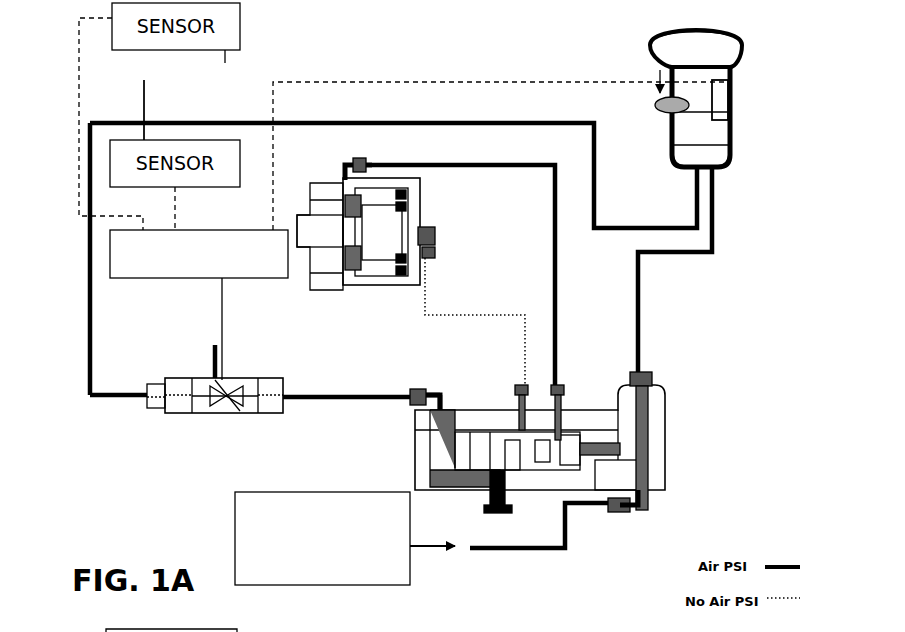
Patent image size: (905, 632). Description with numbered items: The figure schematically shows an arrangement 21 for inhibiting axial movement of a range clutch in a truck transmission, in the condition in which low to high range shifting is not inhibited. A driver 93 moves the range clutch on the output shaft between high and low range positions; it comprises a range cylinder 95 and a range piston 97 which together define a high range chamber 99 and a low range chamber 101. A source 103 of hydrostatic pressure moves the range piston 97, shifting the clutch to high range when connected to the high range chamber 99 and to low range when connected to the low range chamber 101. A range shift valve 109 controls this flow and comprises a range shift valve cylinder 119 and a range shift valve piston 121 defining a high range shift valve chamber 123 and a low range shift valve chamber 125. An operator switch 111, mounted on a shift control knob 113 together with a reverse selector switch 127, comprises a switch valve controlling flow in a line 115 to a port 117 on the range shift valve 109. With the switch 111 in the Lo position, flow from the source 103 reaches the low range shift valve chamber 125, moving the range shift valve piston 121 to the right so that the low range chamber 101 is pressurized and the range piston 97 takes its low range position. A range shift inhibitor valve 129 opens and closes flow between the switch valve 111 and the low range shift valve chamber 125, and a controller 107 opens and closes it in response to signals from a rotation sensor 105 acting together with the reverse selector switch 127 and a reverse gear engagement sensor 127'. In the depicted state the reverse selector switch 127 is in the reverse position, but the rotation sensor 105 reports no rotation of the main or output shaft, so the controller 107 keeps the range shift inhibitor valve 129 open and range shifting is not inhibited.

The arrangement 21 is at (752, 253).
The driver 93 is at (396, 186).
The range cylinder 95 is at (335, 283).
The range piston 97 is at (370, 200).
The high range chamber 99 is at (428, 240).
The low range chamber 101 is at (353, 247).
The source of hydrostatic pressure 103 is at (235, 522).
The rotation sensor 105 is at (148, 99).
The controller 107 is at (110, 248).
The range shift valve 109 is at (555, 418).
The switch 111 is at (658, 100).
The shift control knob 113 is at (700, 105).
The line 115 is at (90, 323).
The port 117 is at (417, 388).
The range shift valve cylinder 119 is at (480, 415).
The range shift valve piston 121 is at (480, 447).
The high range shift valve chamber 123 is at (585, 452).
The low range shift valve chamber 125 is at (445, 448).
The reverse selector switch 127 is at (761, 112).
The reverse gear engagement sensor 127' is at (228, 74).
The range shift inhibitor valve 129 is at (175, 368).